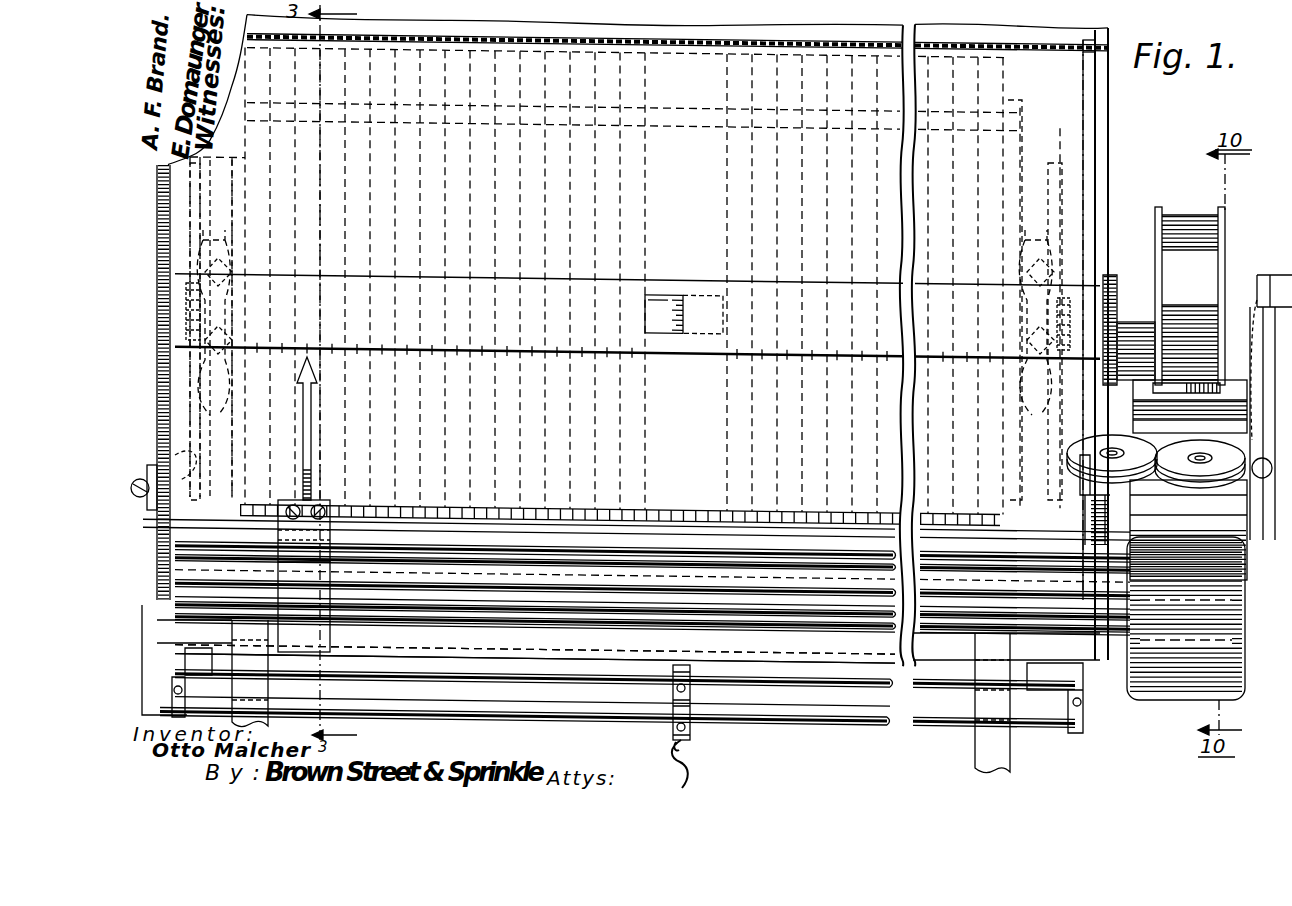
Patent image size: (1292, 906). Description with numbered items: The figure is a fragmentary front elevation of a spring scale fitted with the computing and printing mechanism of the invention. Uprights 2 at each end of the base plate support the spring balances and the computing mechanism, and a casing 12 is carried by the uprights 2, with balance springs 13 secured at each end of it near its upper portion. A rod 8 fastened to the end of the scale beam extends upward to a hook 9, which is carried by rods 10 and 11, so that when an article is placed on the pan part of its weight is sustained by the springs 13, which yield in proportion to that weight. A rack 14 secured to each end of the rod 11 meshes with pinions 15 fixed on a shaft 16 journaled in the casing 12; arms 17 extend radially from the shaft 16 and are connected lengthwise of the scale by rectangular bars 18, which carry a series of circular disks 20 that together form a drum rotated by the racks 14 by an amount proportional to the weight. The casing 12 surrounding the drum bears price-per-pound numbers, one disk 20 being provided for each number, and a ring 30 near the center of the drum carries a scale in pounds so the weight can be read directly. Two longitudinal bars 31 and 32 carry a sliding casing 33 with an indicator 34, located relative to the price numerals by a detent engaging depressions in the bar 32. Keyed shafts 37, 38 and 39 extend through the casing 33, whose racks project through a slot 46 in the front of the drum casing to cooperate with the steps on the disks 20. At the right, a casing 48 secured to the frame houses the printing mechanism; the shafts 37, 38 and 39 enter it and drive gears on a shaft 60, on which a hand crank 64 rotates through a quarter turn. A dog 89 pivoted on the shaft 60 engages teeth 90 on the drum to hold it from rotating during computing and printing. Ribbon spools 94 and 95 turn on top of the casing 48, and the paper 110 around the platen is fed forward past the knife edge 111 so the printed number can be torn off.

The uprights 2 is at (268, 691).
The rod 8 is at (690, 777).
The hook 9 is at (690, 740).
The rod 10 is at (750, 714).
The rod 11 is at (846, 680).
The casing 12 is at (1065, 94).
The balance springs 13 is at (183, 465).
The rack 14 is at (190, 182).
The pinions 15 is at (1118, 262).
The shaft 16 is at (243, 292).
The arms 17 is at (1035, 152).
The rectangular bars 18 is at (706, 120).
The disks 20 is at (633, 102).
The ring 30 is at (710, 296).
The bar 31 is at (700, 540).
The bar 32 is at (852, 618).
The casing 33 is at (330, 634).
The indicator 34 is at (313, 416).
The shaft 37 is at (500, 560).
The shaft 38 is at (555, 590).
The shaft 39 is at (610, 614).
The slot 46 is at (648, 512).
The casing 48 is at (1240, 662).
The shaft 60 is at (1245, 500).
The hand crank 64 is at (1275, 290).
The dog 89 is at (1083, 496).
The teeth 90 is at (1085, 152).
The ribbon spool 94 is at (1200, 476).
The ribbon spool 95 is at (1138, 470).
The paper 110 is at (1207, 246).
The knife edge 111 is at (1190, 406).